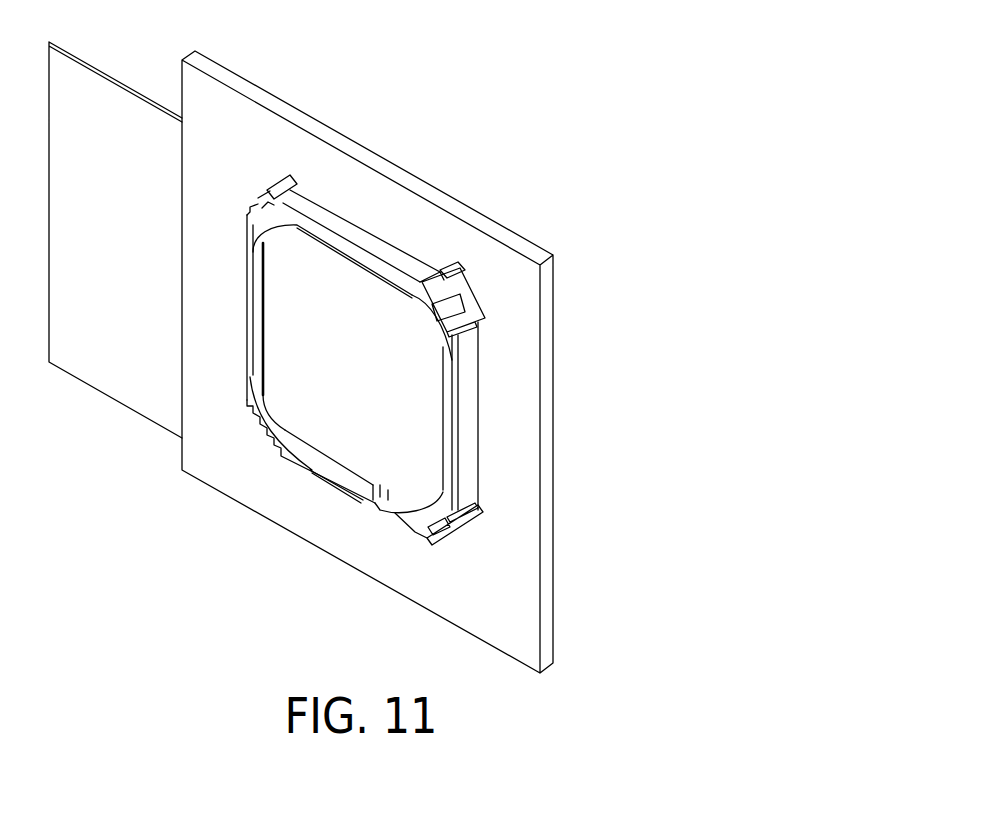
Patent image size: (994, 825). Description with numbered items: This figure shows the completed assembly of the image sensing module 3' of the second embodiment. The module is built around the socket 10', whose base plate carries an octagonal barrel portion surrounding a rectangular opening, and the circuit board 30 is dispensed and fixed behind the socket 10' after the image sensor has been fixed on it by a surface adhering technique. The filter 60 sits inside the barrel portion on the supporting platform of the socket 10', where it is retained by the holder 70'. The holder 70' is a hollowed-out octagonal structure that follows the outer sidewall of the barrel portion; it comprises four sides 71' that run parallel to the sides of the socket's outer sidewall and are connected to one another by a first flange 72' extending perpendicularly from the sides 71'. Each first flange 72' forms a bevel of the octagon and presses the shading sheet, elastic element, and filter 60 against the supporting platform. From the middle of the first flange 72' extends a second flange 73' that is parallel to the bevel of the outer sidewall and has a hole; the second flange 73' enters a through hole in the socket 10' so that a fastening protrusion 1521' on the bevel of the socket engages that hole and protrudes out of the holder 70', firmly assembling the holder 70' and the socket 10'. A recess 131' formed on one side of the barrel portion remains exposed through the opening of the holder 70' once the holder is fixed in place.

The image sensing module 3' is at (669, 59).
The circuit board 30 is at (108, 95).
The socket 10' is at (401, 362).
The holder 70' is at (355, 327).
The side 71' is at (532, 397).
The second flange 73' is at (479, 239).
The fastening protrusion 1521' is at (531, 209).
The filter 60 is at (410, 388).
The first flange 72' is at (508, 556).
The recess 131' is at (359, 550).